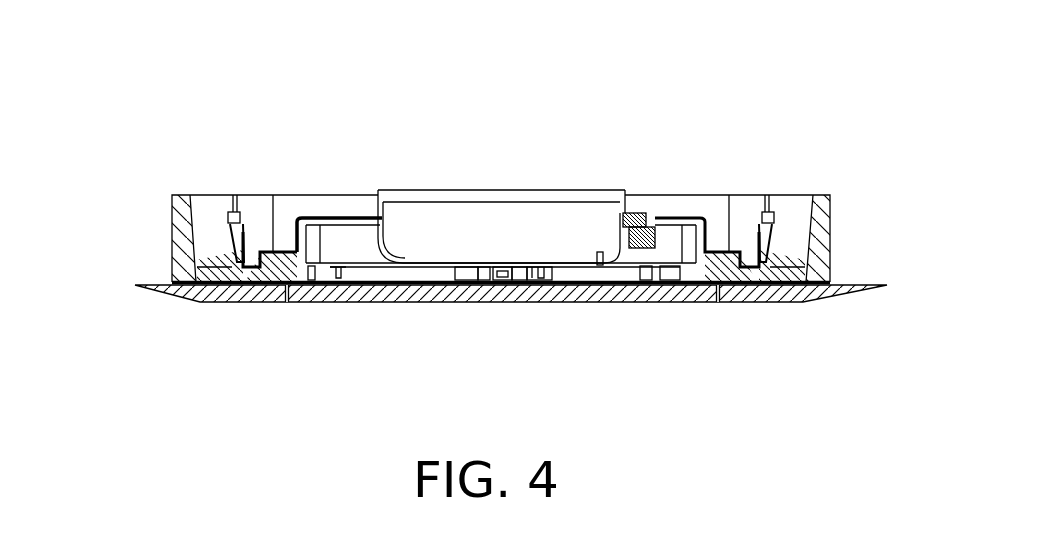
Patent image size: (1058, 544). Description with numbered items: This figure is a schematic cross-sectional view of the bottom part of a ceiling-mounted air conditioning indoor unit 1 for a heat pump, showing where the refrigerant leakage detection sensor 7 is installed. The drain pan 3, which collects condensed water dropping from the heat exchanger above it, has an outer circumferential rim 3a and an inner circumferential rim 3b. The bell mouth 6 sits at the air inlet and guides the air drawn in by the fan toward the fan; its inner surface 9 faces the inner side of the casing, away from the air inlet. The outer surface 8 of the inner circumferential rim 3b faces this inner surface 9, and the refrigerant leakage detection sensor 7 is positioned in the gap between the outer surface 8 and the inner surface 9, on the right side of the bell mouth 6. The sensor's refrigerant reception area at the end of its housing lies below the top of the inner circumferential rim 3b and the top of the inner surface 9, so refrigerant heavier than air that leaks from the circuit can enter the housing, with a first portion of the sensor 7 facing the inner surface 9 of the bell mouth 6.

The ceiling-mounted air conditioning indoor unit 1 is at (232, 53).
The drain pan 3 is at (175, 246).
The outer circumferential rim 3a is at (228, 249).
The inner circumferential rim 3b is at (308, 238).
The bell mouth 6 is at (467, 225).
The refrigerant leakage detection sensor 7 is at (660, 233).
The outer surface of the inner circumferential rim 8 is at (323, 250).
The inner surface of the bell mouth 9 is at (313, 213).